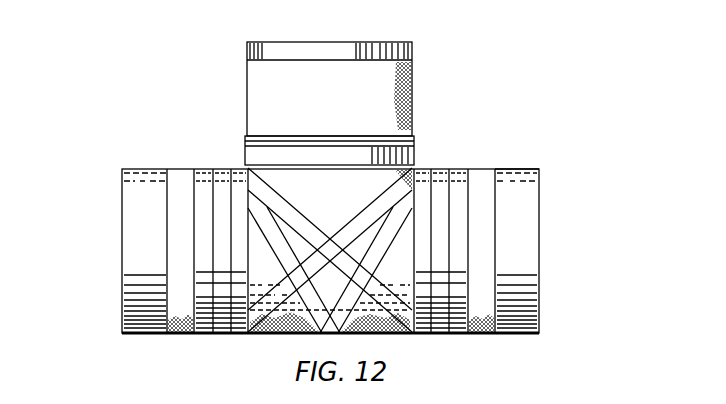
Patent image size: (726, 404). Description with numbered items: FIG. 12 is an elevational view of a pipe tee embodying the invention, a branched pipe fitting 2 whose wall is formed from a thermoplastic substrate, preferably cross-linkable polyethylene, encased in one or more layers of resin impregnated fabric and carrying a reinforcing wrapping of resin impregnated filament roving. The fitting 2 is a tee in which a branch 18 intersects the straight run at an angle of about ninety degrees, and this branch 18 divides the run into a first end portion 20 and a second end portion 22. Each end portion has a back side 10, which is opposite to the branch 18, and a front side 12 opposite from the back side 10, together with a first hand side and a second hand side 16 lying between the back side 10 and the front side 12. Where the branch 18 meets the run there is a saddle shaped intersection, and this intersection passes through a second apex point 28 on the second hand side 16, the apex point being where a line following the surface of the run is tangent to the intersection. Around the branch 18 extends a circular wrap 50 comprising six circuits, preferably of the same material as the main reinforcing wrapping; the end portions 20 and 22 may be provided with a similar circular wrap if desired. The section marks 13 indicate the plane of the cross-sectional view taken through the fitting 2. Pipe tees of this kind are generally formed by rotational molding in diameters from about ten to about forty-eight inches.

The back side 10 is at (510, 337).
The branched pipe fitting 2 is at (132, 198).
The first end portion 20 is at (157, 140).
The second end portion 22 is at (477, 148).
The second hand side 16 is at (518, 252).
The front side 12 is at (513, 172).
The branch 18 is at (420, 46).
The circular wrap 50 is at (413, 147).
The second apex point 28 is at (330, 256).
The section line 13- 13 is at (98, 349).